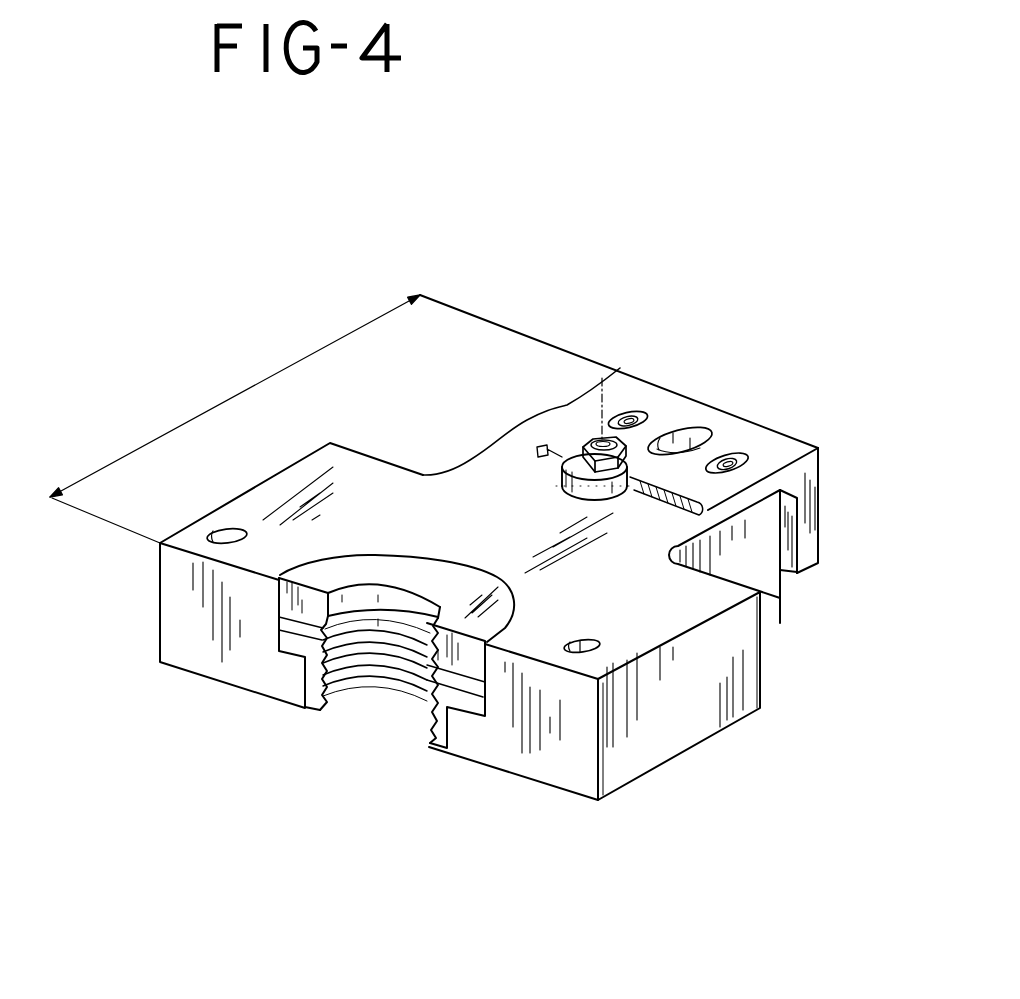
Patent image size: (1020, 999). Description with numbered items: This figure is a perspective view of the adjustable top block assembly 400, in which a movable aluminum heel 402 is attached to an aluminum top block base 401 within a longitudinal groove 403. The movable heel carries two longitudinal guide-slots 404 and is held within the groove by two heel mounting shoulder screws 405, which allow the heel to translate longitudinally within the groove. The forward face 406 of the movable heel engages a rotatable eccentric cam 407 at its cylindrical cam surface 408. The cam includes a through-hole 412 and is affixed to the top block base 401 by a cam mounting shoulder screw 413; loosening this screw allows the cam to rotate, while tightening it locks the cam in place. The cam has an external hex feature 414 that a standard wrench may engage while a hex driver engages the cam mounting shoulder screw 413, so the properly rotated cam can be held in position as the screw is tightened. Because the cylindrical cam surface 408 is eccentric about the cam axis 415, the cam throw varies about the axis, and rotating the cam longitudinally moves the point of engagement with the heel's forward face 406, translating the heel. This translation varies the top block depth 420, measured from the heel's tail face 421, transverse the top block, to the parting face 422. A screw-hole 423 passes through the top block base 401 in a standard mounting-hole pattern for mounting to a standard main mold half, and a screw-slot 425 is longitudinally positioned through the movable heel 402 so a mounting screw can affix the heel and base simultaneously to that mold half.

The adjustable top block assembly 400 is at (389, 239).
The top block base 401 is at (238, 500).
The movable heel 402 is at (720, 433).
The longitudinal groove 403 is at (540, 450).
The longitudinal guide-slots 404 is at (643, 413).
The heel mounting shoulder screws 405 is at (620, 410).
The forward face 406 is at (637, 490).
The rotatable eccentric cam 407 is at (575, 453).
The cylindrical cam surface 408 is at (560, 490).
The through-hole 412 is at (600, 438).
The cam mounting shoulder screw 413 is at (630, 371).
The external hex feature 414 is at (589, 439).
The cam axis 415 is at (620, 368).
The top block depth 420 is at (249, 390).
The tail face 421 is at (820, 490).
The parting face 422 is at (193, 626).
The screw-hole 423 is at (207, 533).
The screw-slot 425 is at (702, 437).